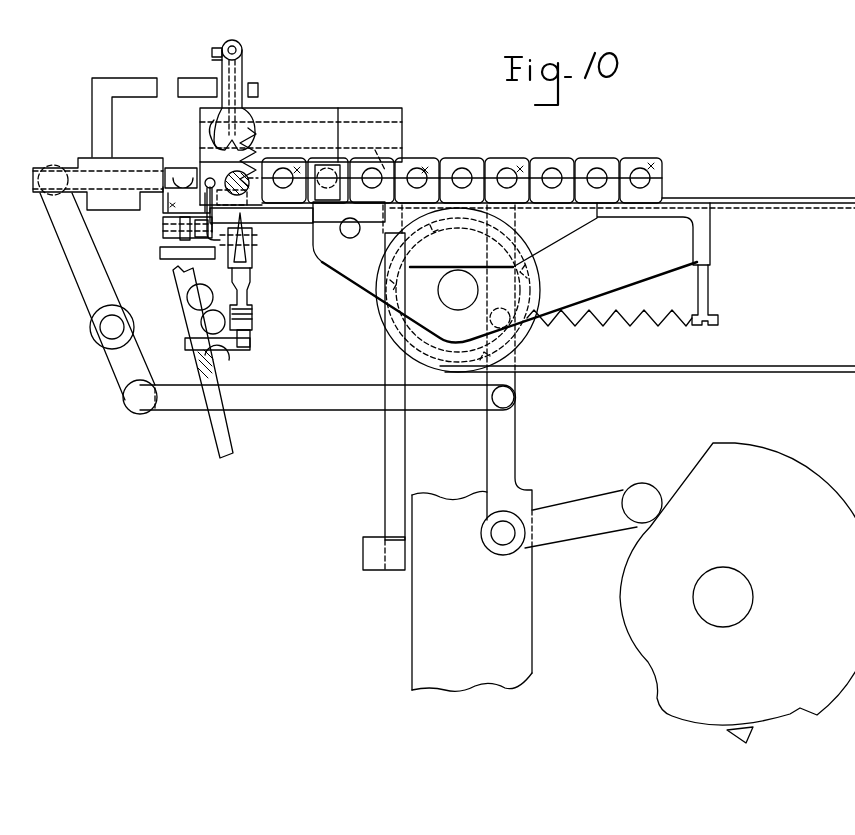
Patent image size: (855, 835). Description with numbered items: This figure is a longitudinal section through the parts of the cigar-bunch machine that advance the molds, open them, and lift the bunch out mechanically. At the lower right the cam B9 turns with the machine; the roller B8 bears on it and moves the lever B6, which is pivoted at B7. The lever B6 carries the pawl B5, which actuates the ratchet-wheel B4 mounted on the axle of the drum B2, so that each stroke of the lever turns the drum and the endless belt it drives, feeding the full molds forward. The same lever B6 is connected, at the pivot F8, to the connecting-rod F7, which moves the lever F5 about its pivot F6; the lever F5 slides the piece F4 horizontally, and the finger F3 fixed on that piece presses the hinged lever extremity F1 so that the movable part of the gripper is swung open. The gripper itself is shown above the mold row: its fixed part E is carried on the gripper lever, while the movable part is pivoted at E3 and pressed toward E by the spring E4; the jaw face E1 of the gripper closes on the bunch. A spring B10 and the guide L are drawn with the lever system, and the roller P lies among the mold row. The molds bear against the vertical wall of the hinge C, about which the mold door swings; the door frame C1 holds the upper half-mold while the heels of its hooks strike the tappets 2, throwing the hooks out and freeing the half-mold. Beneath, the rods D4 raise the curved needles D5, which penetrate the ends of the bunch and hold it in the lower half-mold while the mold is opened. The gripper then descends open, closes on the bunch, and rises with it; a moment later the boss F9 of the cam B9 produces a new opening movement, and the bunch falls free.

The hatched roller P is at (235, 176).
The gripper part E is at (243, 70).
The lever cam lobe E1 is at (212, 112).
The pivot of gripper part E3 is at (236, 44).
The spring E4 is at (216, 66).
The block F1 is at (190, 88).
The finger F3 is at (112, 85).
The sliding piece F4 is at (181, 178).
The lever F5 is at (97, 296).
The pivot of lever F5 F6 is at (105, 330).
The connecting-rod F7 is at (319, 397).
The pivot of connecting-rod F8 is at (516, 397).
The boss of the cam F9 is at (735, 733).
The hinge C is at (206, 178).
The bracket C1 is at (165, 212).
The tappets 2 is at (165, 258).
The rods D4 is at (248, 290).
The curved needles D5 is at (232, 216).
The bracket L is at (330, 208).
The drum B2 is at (472, 360).
The ratchet-wheel B4 is at (432, 355).
The pawl B5 is at (462, 215).
The lever B6 is at (516, 358).
The pivot of lever B6 B7 is at (498, 538).
The roller B8 is at (645, 498).
The cam B9 is at (737, 584).
The spring B10 is at (609, 328).